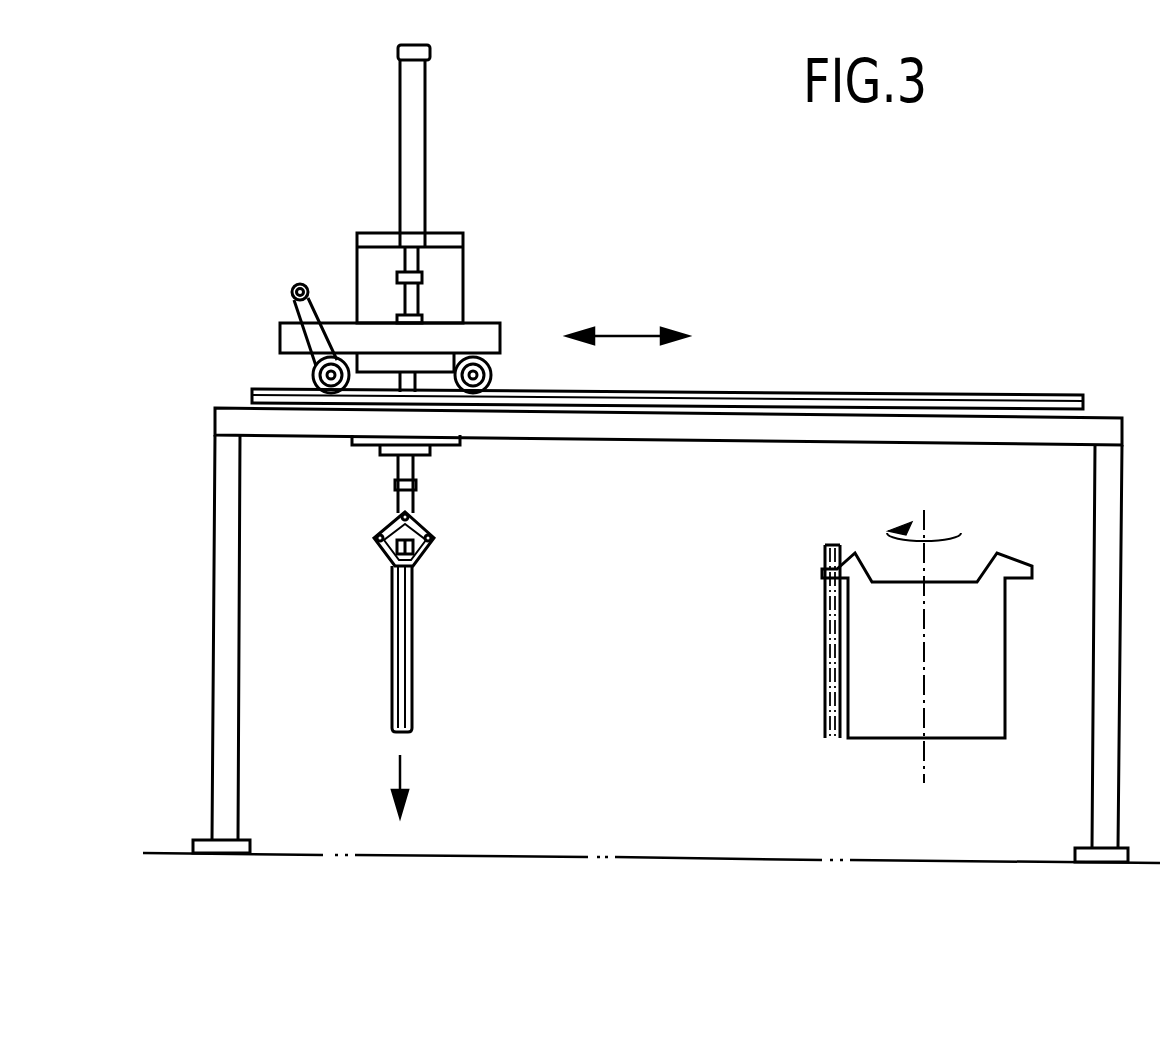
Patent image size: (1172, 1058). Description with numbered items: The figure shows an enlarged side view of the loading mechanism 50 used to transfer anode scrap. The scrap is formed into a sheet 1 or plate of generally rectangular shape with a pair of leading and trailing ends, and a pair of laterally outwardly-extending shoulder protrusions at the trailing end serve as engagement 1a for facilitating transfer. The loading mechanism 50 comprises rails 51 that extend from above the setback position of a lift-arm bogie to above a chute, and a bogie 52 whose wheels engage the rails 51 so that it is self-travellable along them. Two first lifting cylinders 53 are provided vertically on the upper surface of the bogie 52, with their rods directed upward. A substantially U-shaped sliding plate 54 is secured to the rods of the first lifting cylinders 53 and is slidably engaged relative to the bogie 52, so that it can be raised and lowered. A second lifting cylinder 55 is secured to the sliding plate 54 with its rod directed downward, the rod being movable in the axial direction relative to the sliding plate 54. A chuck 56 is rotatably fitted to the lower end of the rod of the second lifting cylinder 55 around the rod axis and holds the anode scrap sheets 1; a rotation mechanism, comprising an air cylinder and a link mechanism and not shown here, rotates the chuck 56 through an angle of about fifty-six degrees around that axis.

The loading mechanism 50 is at (597, 137).
The rails 51 is at (921, 393).
The bogie 52 is at (494, 324).
The first lifting cylinders 53 is at (413, 297).
The sliding plate 54 is at (447, 233).
The second lifting cylinder 55 is at (417, 101).
The chuck 56 is at (415, 469).
The sheet 1 is at (392, 652).
The engagement 1a is at (1022, 585).